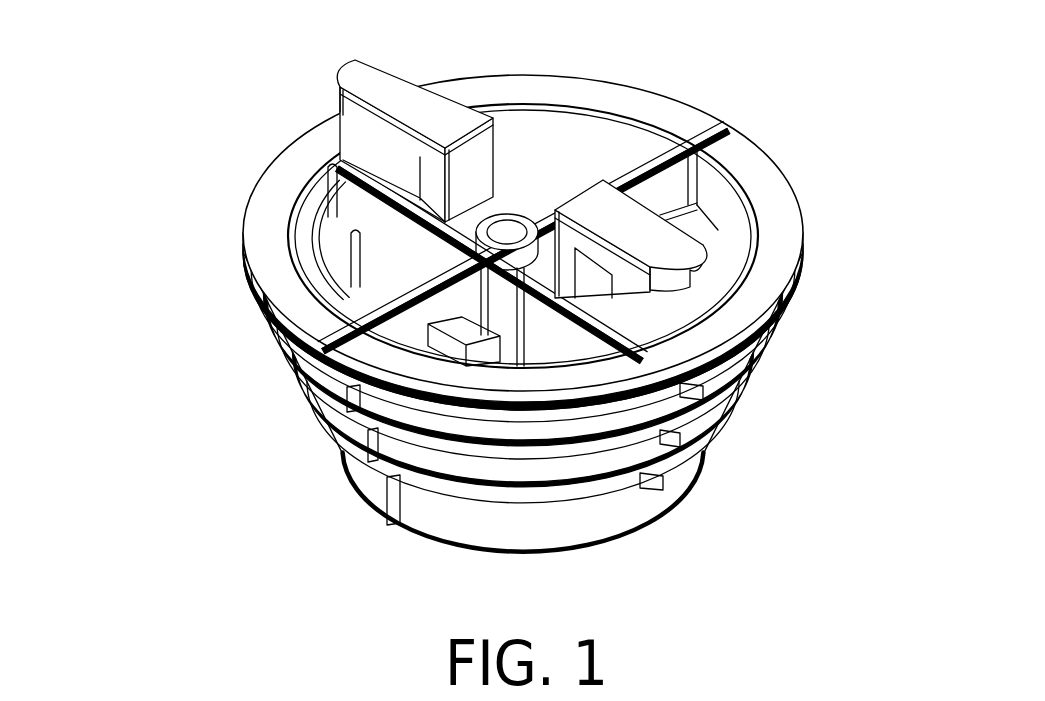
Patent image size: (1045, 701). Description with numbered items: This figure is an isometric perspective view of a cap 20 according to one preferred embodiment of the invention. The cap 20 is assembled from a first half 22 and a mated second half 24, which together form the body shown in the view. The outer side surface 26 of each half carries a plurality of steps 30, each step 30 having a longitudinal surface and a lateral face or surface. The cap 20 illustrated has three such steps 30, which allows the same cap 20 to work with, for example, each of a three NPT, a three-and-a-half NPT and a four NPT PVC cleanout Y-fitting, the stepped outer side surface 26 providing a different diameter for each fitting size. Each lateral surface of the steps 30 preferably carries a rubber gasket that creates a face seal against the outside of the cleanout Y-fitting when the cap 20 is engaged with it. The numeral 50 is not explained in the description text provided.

The cap 20 is at (475, 276).
The first half 22 is at (627, 100).
The second half 24 is at (780, 207).
The outer side surface 26 is at (720, 474).
The steps 30 is at (750, 403).
The grip bosses 50 is at (382, 72).